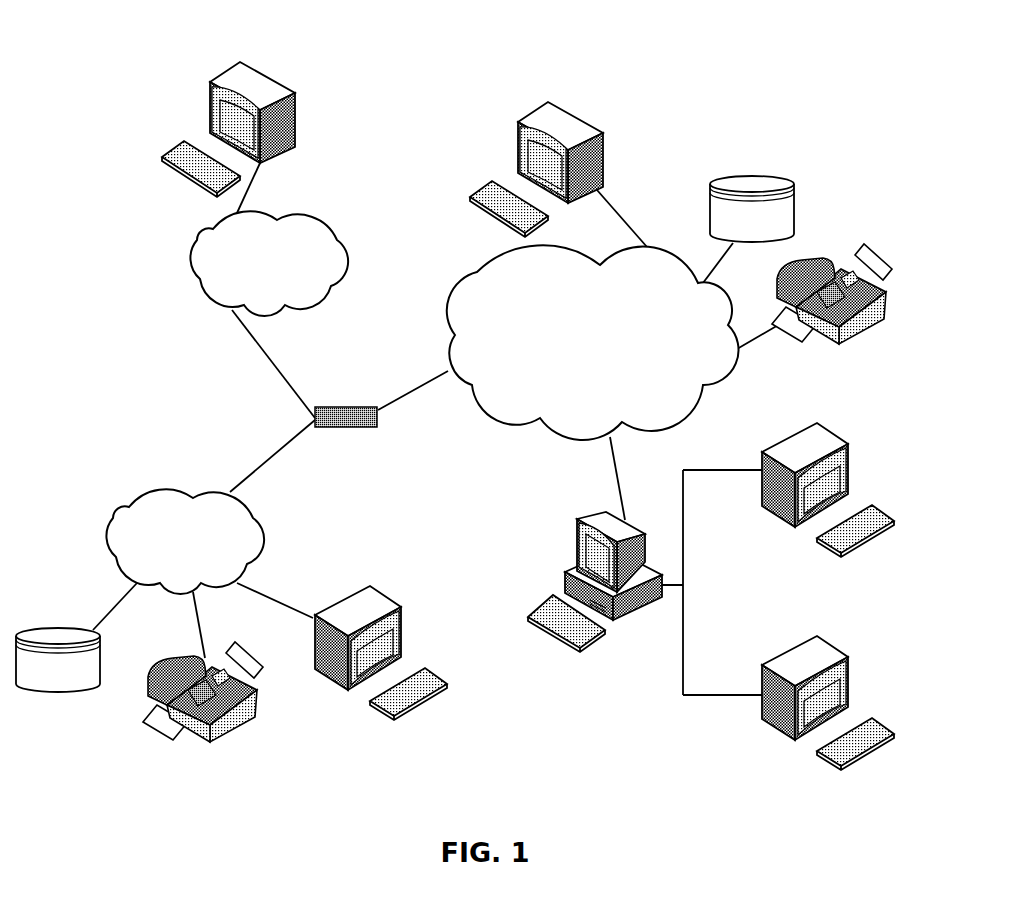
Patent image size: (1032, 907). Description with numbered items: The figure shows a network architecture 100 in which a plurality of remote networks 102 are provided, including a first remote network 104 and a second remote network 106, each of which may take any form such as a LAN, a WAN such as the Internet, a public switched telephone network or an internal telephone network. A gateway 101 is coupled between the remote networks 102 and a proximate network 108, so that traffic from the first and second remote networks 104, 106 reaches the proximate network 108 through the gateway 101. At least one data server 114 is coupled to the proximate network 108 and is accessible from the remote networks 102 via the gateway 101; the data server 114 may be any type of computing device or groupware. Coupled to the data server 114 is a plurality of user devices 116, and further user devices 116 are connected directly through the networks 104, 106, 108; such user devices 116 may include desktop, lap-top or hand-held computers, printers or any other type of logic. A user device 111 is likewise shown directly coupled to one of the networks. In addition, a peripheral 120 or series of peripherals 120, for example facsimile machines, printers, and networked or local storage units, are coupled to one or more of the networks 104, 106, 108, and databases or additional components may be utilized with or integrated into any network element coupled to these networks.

The architecture 100 is at (141, 43).
The gateway 101 is at (324, 406).
The remote networks 102 is at (170, 326).
The first remote network 104 is at (115, 513).
The second remote network 106 is at (340, 233).
The proximate network 108 is at (697, 413).
The user device 111 is at (603, 134).
The data server 114 is at (577, 540).
The user devices 116 is at (295, 103).
The peripheral 120 is at (793, 188).